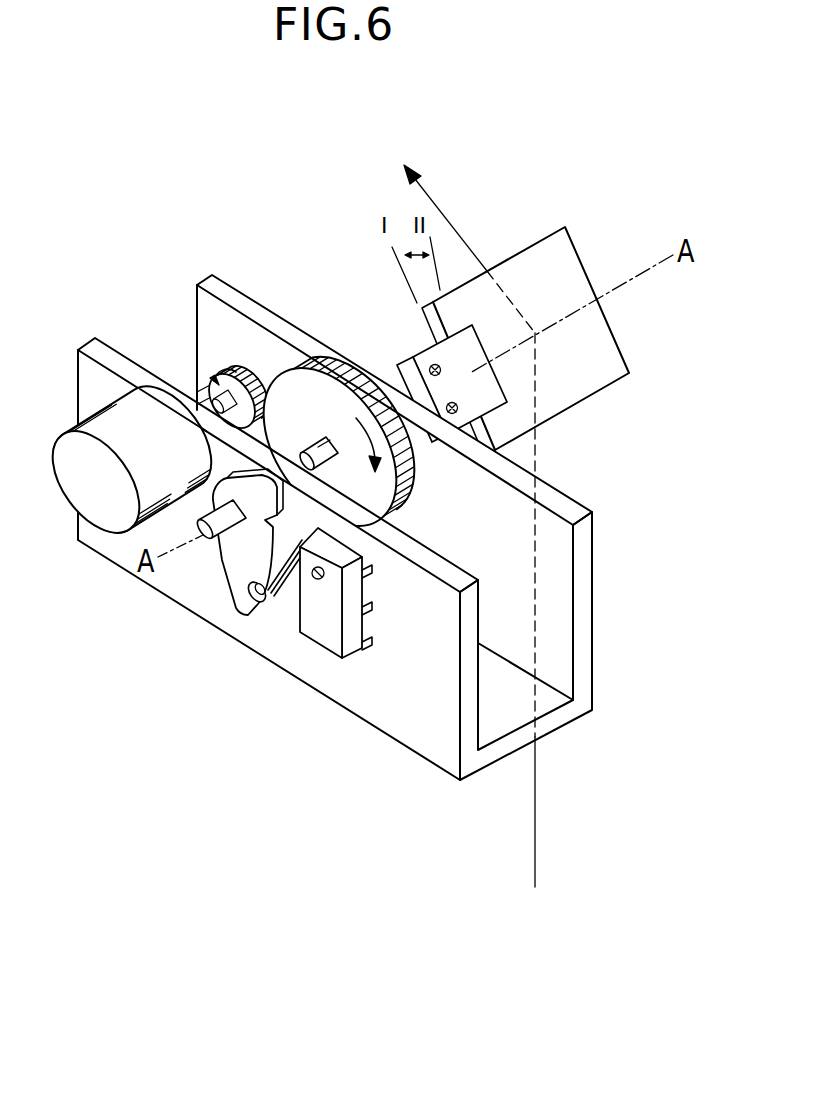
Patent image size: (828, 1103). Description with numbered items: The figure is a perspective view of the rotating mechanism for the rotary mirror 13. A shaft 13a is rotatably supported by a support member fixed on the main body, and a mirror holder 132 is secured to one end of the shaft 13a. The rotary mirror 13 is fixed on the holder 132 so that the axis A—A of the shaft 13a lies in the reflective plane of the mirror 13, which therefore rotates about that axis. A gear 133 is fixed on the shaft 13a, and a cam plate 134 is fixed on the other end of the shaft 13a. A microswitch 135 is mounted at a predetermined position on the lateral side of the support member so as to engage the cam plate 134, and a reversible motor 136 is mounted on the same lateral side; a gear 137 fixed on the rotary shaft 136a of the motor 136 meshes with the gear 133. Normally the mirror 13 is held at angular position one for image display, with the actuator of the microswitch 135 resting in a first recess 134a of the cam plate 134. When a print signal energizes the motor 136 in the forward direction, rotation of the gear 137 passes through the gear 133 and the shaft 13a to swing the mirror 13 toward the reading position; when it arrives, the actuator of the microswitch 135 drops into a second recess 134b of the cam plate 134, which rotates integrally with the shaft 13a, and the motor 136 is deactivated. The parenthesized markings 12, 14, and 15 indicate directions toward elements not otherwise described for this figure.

The rotary mirror 13 is at (573, 258).
The shaft 13a is at (312, 453).
The mirror holder 132 is at (490, 378).
The gear 133 is at (350, 362).
The cam plate 134 is at (245, 592).
The first recess 134a is at (253, 608).
The second recess 134b is at (245, 523).
The microswitch 135 is at (333, 642).
The reversible motor 136 is at (147, 383).
The rotary shaft of motor 136a is at (208, 387).
The gear 137 is at (250, 370).
The roller axis 12 is at (537, 636).
The roller 14 is at (443, 227).
The roller 15 is at (511, 302).